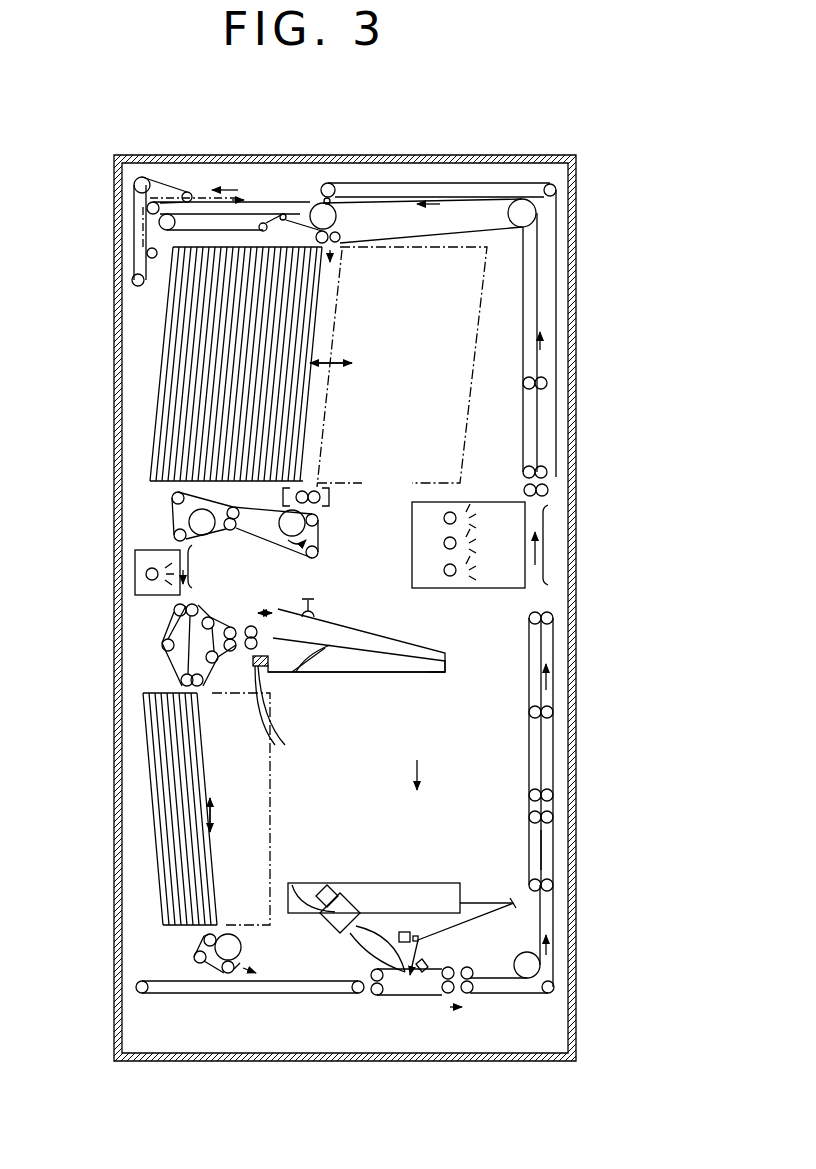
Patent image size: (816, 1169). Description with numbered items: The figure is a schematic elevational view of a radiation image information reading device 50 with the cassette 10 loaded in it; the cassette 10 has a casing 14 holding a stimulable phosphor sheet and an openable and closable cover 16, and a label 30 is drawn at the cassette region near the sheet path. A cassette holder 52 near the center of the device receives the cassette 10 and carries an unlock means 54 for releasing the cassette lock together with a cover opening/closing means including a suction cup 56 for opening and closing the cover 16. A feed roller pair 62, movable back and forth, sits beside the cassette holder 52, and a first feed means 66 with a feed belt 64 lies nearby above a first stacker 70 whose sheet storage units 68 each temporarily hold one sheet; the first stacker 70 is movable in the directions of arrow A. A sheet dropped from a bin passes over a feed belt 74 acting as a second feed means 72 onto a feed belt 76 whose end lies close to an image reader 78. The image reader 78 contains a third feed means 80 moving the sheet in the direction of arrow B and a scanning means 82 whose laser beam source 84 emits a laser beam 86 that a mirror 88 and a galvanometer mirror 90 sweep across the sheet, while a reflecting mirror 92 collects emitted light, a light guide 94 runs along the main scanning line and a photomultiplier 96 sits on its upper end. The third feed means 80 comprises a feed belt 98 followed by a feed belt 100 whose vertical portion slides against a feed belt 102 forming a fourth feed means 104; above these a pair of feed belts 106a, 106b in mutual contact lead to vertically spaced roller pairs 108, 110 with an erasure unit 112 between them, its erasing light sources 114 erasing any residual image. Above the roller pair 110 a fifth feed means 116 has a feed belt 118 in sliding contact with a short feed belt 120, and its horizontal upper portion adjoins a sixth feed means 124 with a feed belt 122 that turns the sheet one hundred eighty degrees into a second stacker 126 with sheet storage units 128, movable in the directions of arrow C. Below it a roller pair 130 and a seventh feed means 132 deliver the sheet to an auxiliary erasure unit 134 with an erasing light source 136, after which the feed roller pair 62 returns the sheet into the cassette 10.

The cassette 10 is at (398, 678).
The casing 14 is at (428, 673).
The cover 16 is at (372, 633).
The sheet path 30 is at (322, 664).
The radiation image information reading device 50 is at (582, 270).
The cassette holder 52 is at (318, 680).
The unlock means 54 is at (282, 679).
The suction cup 56 is at (312, 598).
The feed roller pair 62 is at (252, 626).
The feed belt 64 is at (175, 614).
The first feed means 66 is at (160, 641).
The sheet storage units 68 is at (160, 757).
The first stacker 70 is at (140, 806).
The second feed means 72 is at (188, 948).
The feed belt 74 is at (210, 966).
The feed belt 76 is at (283, 993).
The image reader 78 is at (428, 752).
The third feed means 80 is at (387, 1000).
The scanning means 82 is at (343, 874).
The laser beam source 84 is at (377, 886).
The laser beam 86 is at (483, 901).
The mirror 88 is at (513, 900).
The galvanometer mirror 90 is at (405, 932).
The reflecting mirror 92 is at (426, 963).
The light guide 94 is at (370, 953).
The photomultiplier 96 is at (296, 884).
The feed belt 98 is at (418, 995).
The feed belt 100 is at (559, 905).
The feed belt 102 is at (529, 830).
The fourth feed means 104 is at (560, 840).
The feed belt 106a is at (556, 755).
The feed belt 106b is at (530, 653).
The roller pair 108 is at (553, 616).
The roller pair 110 is at (549, 493).
The erasure unit 112 is at (491, 502).
The erasing light sources 114 is at (447, 512).
The fifth feed means 116 is at (562, 397).
The feed belt 118 is at (561, 313).
The feed belt 120 is at (522, 368).
The feed belt 122 is at (300, 201).
The sixth feed means 124 is at (149, 172).
The second stacker 126 is at (162, 310).
The sheet storage units 128 is at (175, 355).
The roller pair 130 is at (317, 489).
The seventh feed means 132 is at (168, 509).
The auxiliary erasure unit 134 is at (125, 588).
The erasing light source 136 is at (146, 570).